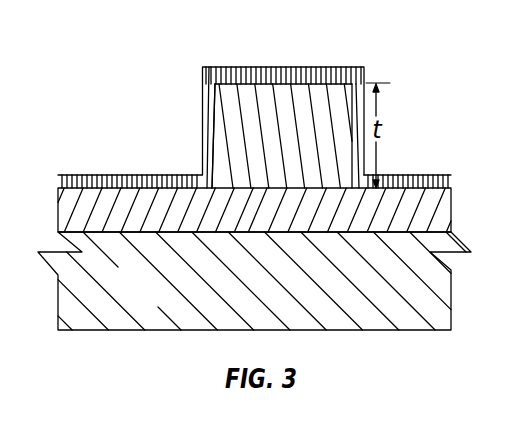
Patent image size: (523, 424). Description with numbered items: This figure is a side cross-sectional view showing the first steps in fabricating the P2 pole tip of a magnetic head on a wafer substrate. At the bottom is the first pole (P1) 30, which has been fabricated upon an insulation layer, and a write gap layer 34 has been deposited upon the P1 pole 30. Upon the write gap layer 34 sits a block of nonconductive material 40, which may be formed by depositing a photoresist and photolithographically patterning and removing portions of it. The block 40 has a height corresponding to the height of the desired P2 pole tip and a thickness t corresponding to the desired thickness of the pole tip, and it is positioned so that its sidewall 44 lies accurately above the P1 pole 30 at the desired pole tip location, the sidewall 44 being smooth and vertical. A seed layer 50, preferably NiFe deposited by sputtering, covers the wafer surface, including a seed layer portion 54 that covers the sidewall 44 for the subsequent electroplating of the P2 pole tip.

The first pole (P1) 30 is at (148, 305).
The write gap layer 34 is at (125, 202).
The block of nonconductive material 40 is at (305, 98).
The sidewall 44 is at (215, 149).
The seed layer 50 is at (252, 71).
The seed layer portion 54 is at (210, 104).